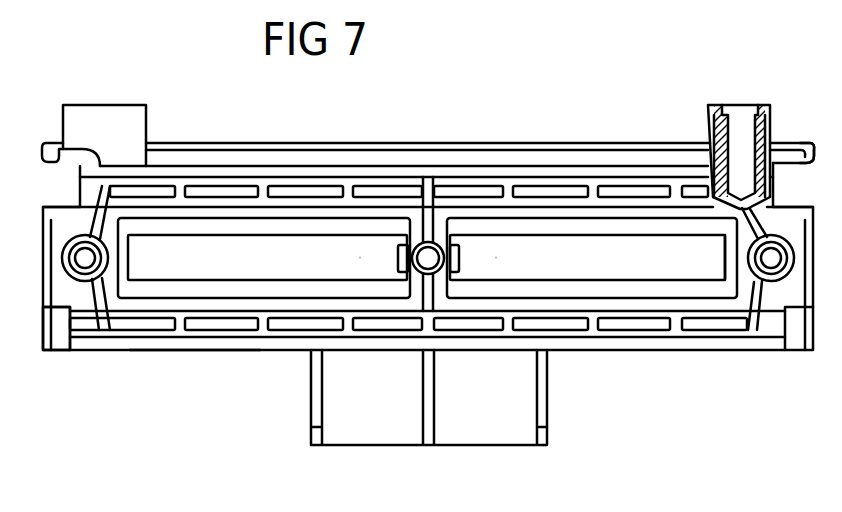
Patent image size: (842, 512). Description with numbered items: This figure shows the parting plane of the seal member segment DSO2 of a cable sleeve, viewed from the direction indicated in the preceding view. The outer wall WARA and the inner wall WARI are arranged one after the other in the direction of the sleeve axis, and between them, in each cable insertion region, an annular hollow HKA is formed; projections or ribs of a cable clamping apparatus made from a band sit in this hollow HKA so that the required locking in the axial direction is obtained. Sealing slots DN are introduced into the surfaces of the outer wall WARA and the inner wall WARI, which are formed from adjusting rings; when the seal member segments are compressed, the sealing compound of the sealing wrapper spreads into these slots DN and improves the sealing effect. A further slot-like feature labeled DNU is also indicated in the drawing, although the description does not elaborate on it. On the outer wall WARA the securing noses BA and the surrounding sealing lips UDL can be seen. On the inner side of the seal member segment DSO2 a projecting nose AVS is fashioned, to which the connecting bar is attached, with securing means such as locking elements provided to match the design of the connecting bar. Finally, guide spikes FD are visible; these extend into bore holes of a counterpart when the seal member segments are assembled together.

The securing noses BA is at (132, 124).
The hollow for cable clamping apparatus HKA is at (496, 257).
The outer wall WARA is at (533, 170).
The inner wall WARI is at (632, 333).
The sealing slots DN is at (630, 190).
The surrounding sealing lips UDL is at (805, 145).
The guide spikes FD is at (752, 259).
The lower groove DNU is at (52, 295).
The seal member segment DSO2 is at (207, 359).
The projecting nose AVS is at (475, 415).